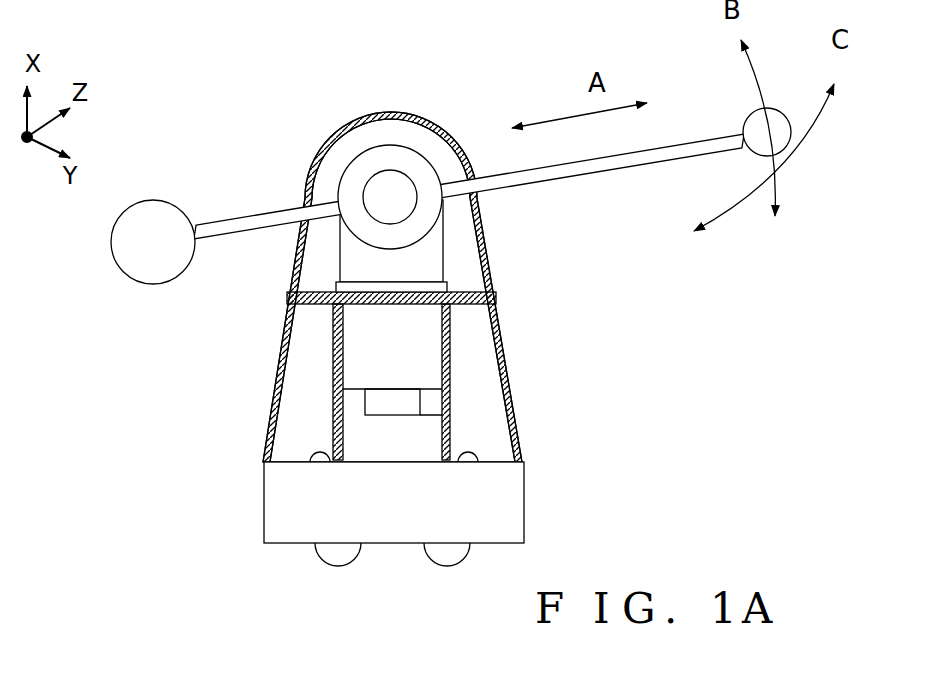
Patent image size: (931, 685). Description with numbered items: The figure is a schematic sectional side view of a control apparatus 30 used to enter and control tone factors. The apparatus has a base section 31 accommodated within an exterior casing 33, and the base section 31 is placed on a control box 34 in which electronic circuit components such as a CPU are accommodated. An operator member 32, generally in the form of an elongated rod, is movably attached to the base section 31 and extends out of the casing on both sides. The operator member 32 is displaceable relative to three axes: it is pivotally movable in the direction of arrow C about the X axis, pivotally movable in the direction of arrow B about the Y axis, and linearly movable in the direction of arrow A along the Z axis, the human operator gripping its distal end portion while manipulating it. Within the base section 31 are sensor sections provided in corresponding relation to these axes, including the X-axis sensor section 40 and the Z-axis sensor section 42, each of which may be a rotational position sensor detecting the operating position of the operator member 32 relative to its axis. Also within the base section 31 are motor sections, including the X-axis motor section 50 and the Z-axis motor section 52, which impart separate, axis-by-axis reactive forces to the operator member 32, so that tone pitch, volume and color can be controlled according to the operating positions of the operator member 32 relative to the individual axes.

The control apparatus 30 is at (180, 423).
The base section 31 is at (460, 242).
The operator member 32 is at (261, 211).
The exterior casing 33 is at (293, 293).
The control box 34 is at (524, 492).
The X-axis sensor section 40 is at (423, 415).
The Z-axis sensor section 42 is at (392, 196).
The X-axis motor section 50 is at (423, 360).
The Z-axis motor section 52 is at (393, 145).